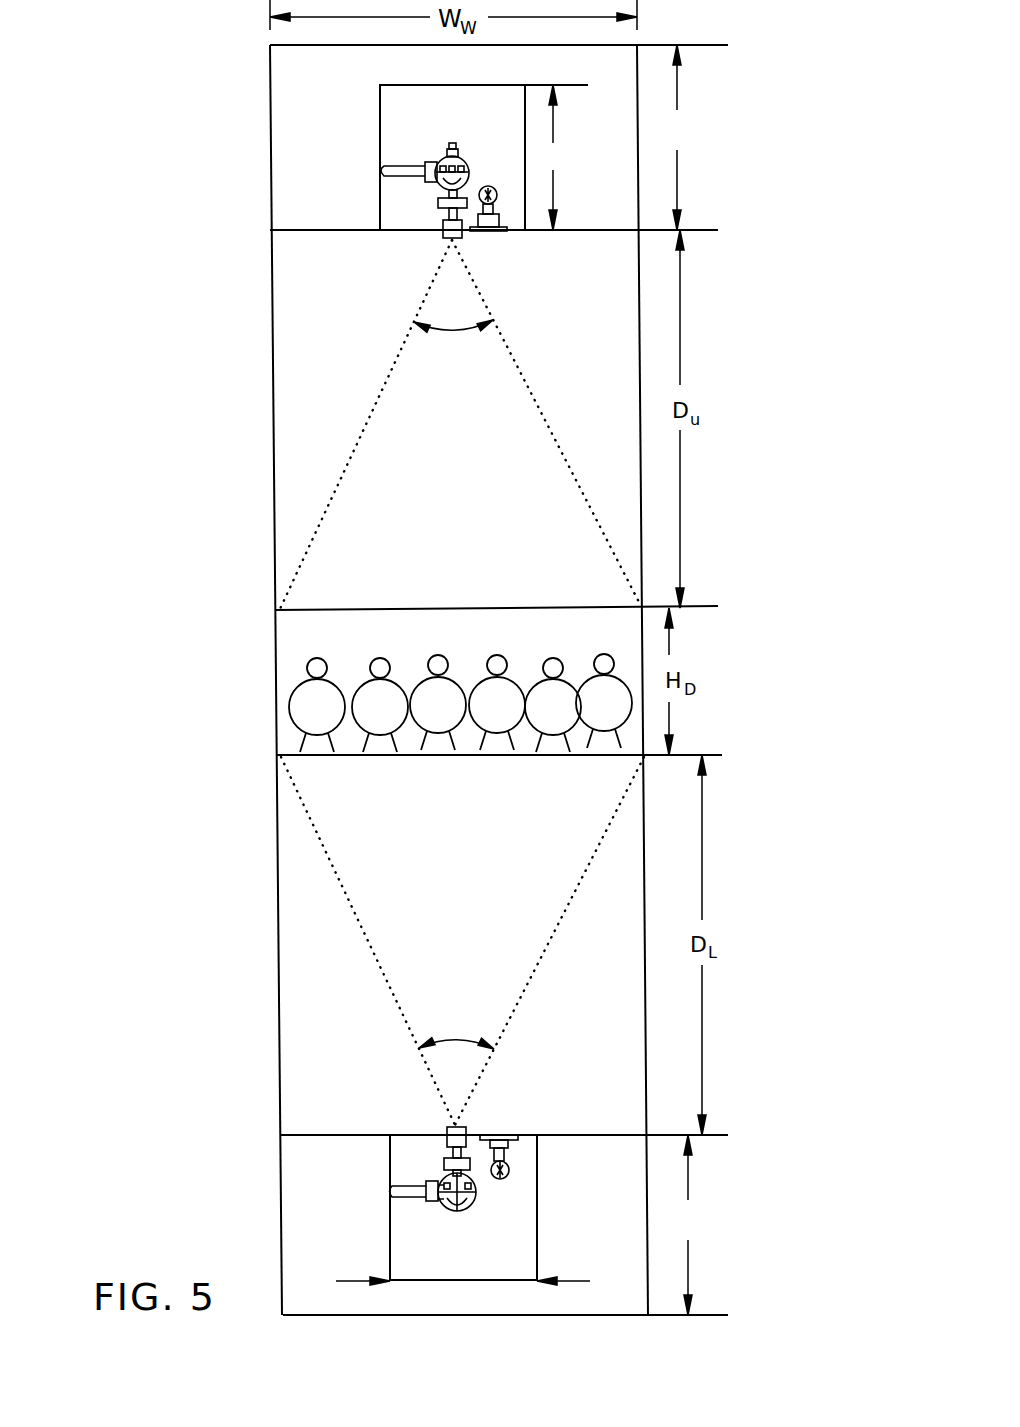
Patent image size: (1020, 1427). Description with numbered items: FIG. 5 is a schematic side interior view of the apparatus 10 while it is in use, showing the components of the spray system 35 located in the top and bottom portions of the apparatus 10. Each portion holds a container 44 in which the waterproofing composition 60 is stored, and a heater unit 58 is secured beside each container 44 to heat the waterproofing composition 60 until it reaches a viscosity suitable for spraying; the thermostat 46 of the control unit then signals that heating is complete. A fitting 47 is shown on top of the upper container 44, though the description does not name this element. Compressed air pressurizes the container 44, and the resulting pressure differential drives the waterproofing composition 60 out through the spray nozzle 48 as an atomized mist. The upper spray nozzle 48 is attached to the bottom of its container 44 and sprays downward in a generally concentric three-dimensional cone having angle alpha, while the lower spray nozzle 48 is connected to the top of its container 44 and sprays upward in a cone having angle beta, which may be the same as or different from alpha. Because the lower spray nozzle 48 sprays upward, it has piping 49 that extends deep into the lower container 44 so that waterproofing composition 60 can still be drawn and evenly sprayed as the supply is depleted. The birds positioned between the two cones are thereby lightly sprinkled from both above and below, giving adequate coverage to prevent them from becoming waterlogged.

The apparatus 10 is at (262, 990).
The spray system 35 is at (320, 1195).
The container 44 is at (465, 163).
The thermostat 46 is at (398, 166).
The camera connector 47 is at (452, 143).
The spray nozzle 48 is at (444, 240).
The piping 49 is at (442, 1203).
The heater unit 58 is at (493, 231).
The waterproofing composition 60 is at (470, 175).